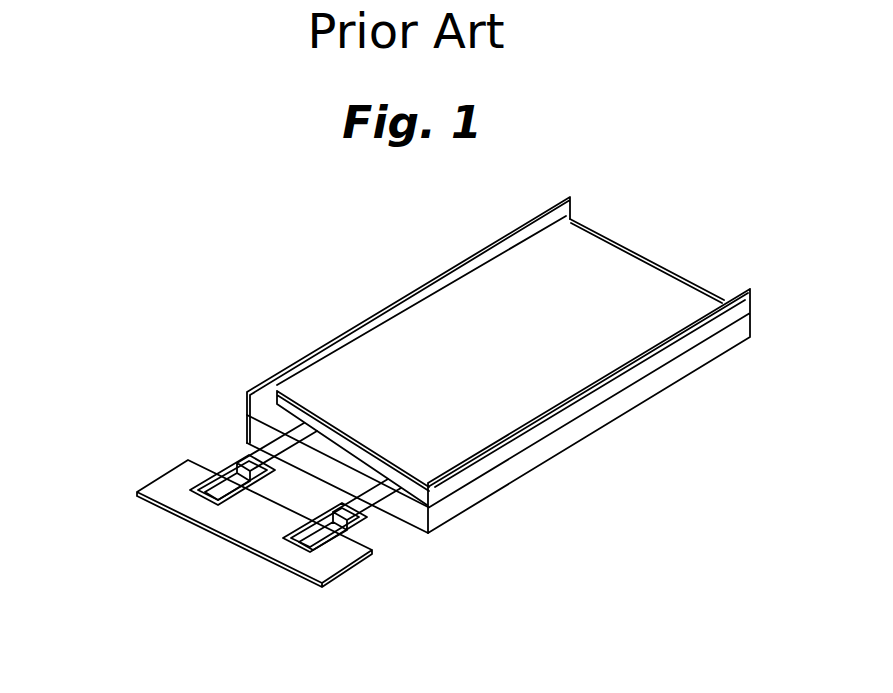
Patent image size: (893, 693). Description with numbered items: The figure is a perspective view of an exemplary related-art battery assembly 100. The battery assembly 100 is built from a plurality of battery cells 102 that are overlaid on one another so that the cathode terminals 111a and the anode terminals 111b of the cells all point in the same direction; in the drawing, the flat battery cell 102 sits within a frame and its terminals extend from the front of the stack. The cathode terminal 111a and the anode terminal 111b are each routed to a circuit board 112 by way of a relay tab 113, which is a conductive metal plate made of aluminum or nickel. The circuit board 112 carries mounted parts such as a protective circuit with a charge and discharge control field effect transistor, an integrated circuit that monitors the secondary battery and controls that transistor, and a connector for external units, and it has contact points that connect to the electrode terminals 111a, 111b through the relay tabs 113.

The battery assembly 100 is at (395, 262).
The battery cell 102 is at (621, 275).
The cathode terminal 111a is at (380, 520).
The anode terminal 111b is at (240, 461).
The circuit board 112 is at (165, 480).
The relay tab 113 is at (213, 484).